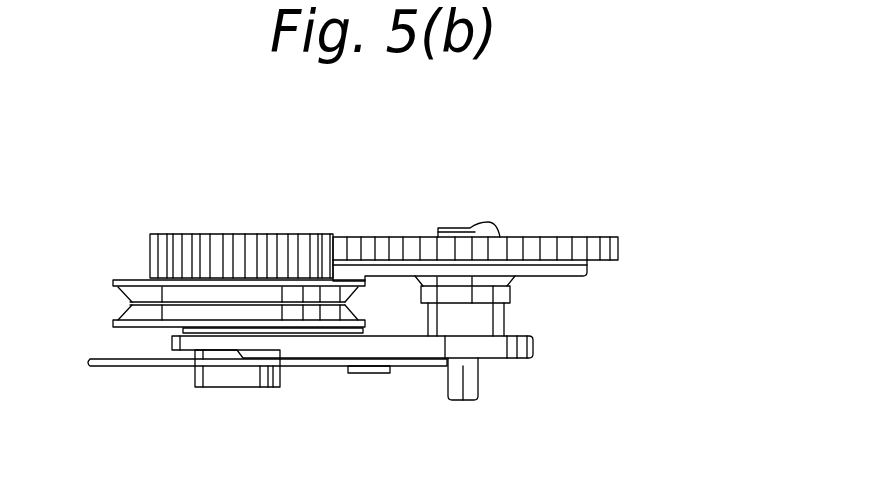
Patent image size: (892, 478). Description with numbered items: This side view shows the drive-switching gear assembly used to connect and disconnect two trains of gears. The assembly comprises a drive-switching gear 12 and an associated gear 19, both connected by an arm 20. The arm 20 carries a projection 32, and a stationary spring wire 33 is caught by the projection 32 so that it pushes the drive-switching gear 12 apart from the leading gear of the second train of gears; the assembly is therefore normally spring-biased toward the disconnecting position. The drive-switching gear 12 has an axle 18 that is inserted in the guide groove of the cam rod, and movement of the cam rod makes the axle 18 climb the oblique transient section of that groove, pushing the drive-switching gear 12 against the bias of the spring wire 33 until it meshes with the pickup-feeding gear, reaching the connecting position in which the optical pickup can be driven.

The drive-switching gear 12 is at (548, 237).
The axle 18 is at (478, 383).
The associated gear 19 is at (266, 235).
The arm 20 is at (325, 348).
The projection 32 is at (373, 374).
The stationary spring wire 33 is at (292, 370).